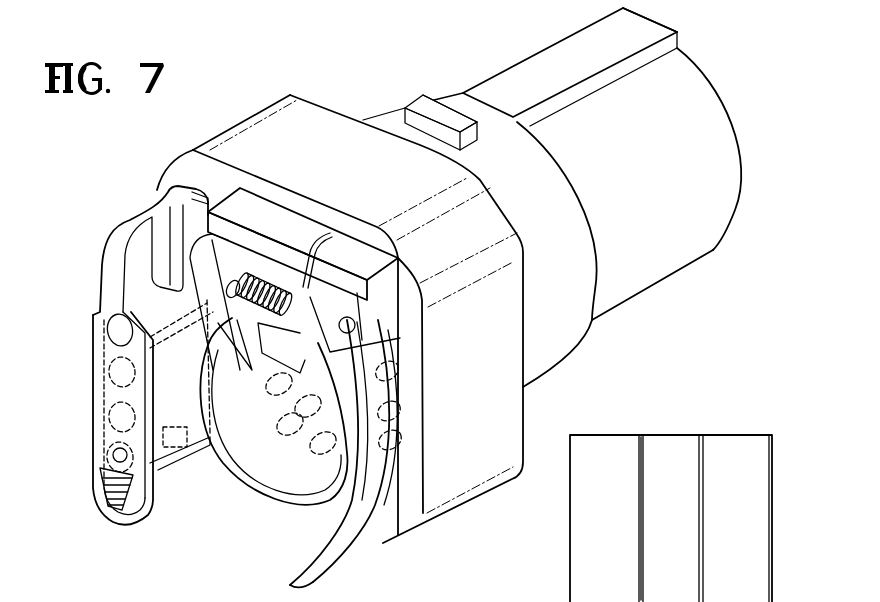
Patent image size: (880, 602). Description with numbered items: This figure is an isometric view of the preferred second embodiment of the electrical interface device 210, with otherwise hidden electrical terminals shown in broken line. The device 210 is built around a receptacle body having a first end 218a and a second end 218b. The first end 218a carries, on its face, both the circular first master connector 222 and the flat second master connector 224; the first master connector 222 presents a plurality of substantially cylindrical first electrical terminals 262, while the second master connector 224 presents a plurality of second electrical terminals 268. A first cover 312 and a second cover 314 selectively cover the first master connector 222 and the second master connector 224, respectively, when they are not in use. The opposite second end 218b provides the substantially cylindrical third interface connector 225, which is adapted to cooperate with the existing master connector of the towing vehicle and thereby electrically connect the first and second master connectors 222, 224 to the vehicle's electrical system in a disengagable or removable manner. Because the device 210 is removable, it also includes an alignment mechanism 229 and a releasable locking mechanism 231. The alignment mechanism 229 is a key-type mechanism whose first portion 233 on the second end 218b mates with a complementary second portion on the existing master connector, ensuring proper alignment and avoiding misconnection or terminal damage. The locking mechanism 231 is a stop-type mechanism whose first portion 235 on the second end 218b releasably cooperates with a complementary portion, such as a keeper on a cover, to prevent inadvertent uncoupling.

The electrical interface device 210 is at (86, 177).
The first end 218a is at (114, 535).
The second end 218b is at (765, 116).
The first master connector 222 is at (268, 450).
The second master connector 224 is at (167, 348).
The third interface connector 225 is at (743, 155).
The alignment mechanism 229 is at (689, 31).
The releasable locking mechanism 231 is at (396, 106).
The first portion of the key-type mechanism 233 is at (562, 60).
The first portion of the stop-type mechanism 235 is at (441, 110).
The first electrical terminals 262 is at (304, 460).
The second electrical terminals 268 is at (105, 373).
The first cover 312 is at (287, 537).
The second cover 314 is at (97, 453).